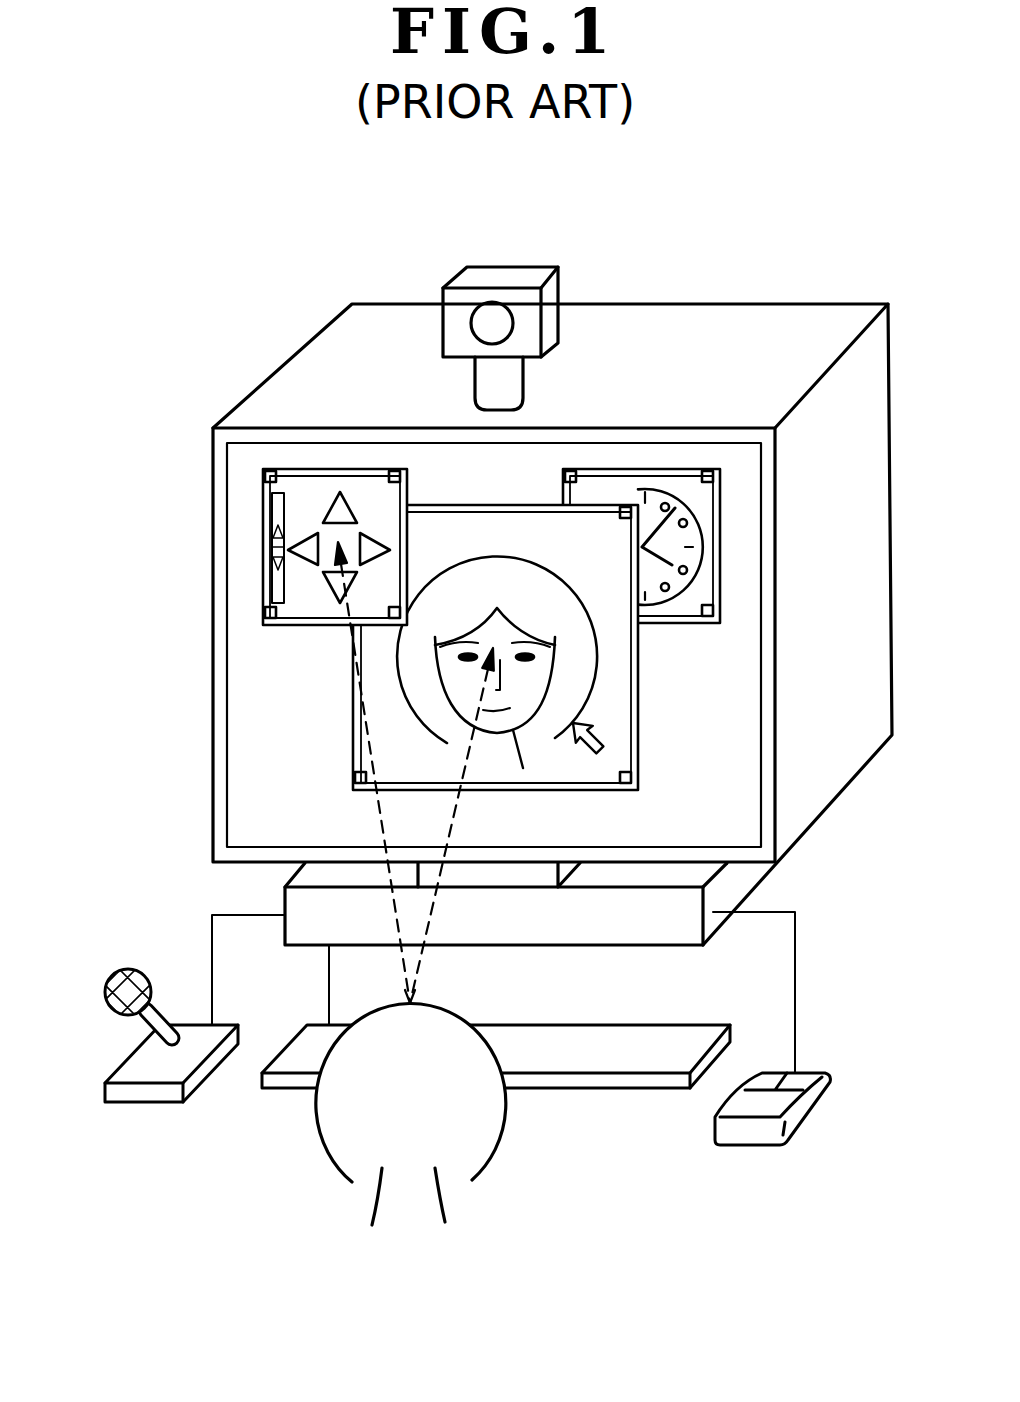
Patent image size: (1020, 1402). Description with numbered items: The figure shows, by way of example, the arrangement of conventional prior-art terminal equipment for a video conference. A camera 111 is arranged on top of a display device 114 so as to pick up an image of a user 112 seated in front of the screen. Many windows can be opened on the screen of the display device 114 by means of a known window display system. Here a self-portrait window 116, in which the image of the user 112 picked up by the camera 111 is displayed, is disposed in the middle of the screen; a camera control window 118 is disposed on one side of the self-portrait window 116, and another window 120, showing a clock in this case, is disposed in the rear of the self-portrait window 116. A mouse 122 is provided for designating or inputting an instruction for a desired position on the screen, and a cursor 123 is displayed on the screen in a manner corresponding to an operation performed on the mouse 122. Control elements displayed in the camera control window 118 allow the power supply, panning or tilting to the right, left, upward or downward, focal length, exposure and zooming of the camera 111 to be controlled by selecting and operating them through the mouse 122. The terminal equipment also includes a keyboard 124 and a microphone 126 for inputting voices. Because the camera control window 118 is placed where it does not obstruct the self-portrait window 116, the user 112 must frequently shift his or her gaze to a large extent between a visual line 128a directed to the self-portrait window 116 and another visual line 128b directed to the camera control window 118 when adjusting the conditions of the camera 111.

The camera 111 is at (495, 278).
The user 112 is at (318, 1128).
The display device 114 is at (300, 348).
The self-portrait window 116 is at (353, 727).
The camera control window 118 is at (264, 548).
The window 120 is at (720, 525).
The mouse 122 is at (808, 1108).
The cursor 123 is at (605, 733).
The keyboard 124 is at (568, 1058).
The microphone 126 is at (133, 968).
The visual line 128a is at (457, 807).
The visual line 128b is at (380, 822).